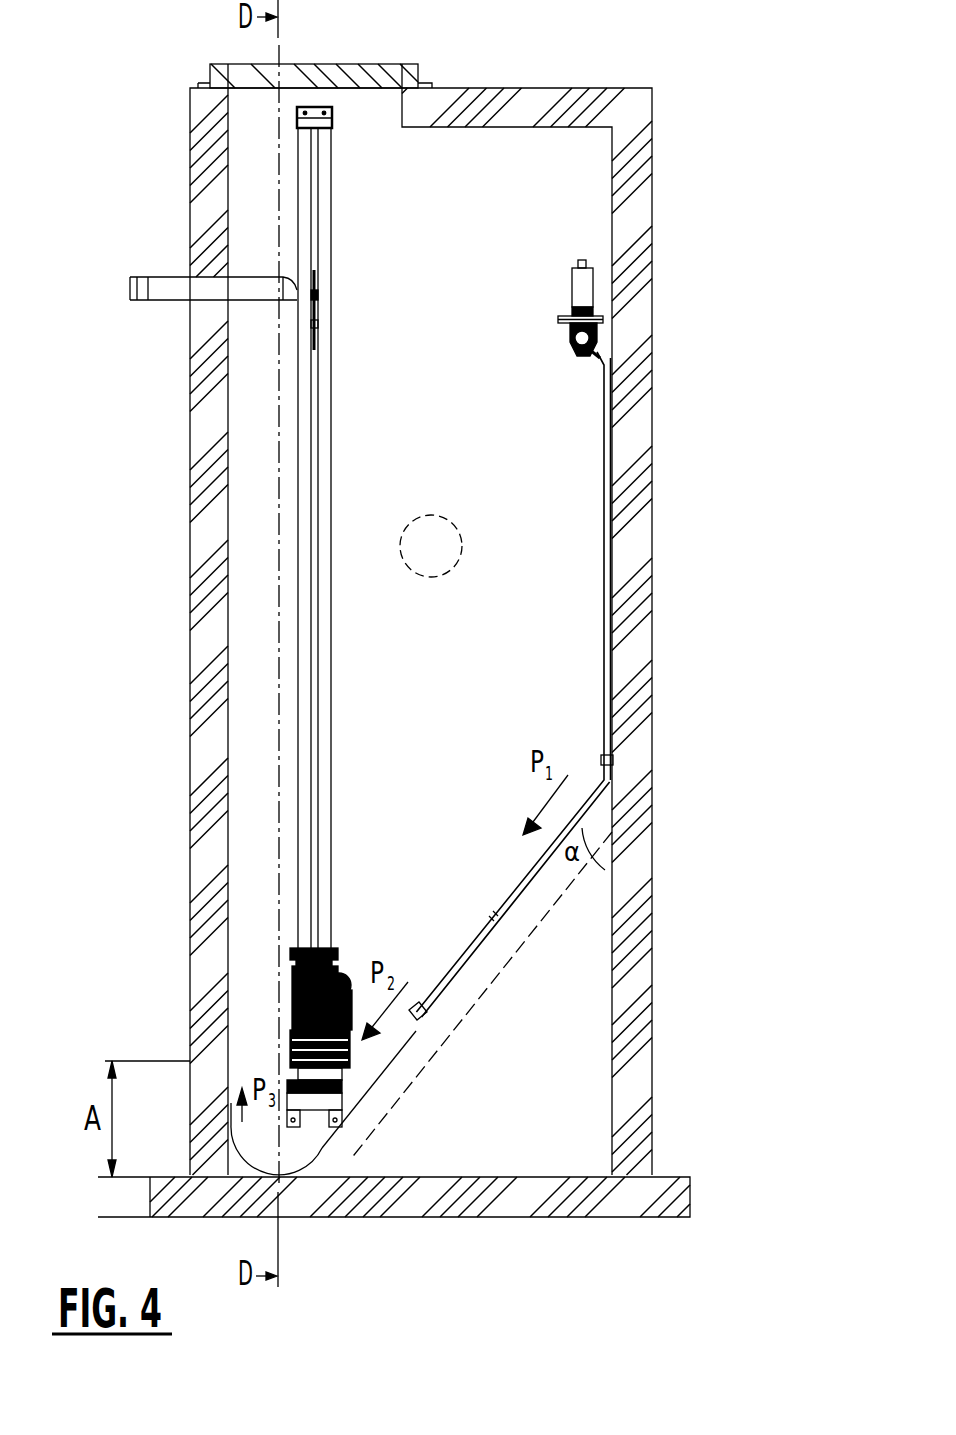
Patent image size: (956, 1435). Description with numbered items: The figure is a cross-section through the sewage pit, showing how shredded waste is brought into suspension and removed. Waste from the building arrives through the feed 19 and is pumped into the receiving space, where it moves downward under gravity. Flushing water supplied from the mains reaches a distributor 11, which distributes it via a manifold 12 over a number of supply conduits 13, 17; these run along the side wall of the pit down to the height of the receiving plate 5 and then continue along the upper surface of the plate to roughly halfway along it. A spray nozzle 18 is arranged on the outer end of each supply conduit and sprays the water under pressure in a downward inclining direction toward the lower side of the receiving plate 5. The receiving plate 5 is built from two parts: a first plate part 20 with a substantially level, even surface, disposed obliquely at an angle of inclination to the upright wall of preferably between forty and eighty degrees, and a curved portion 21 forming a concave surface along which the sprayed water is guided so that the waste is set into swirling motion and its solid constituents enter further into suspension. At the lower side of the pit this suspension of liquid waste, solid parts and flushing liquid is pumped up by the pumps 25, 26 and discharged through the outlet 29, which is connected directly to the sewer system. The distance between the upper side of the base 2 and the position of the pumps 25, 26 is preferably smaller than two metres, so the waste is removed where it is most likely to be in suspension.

The lying wall part 2 is at (410, 1200).
The receiving plate 5 is at (408, 1047).
The distributor 11 is at (580, 285).
The manifold 12 is at (575, 338).
The supply conduit 13 is at (514, 684).
The supply conduit 17 is at (488, 918).
The spray nozzle 18 is at (416, 1006).
The feed 19 is at (445, 548).
The first plate part 20 is at (490, 987).
The curved portion 21 is at (330, 1180).
The pump 25 is at (226, 1037).
The pump 26 is at (313, 1057).
The outlet 29 is at (170, 292).